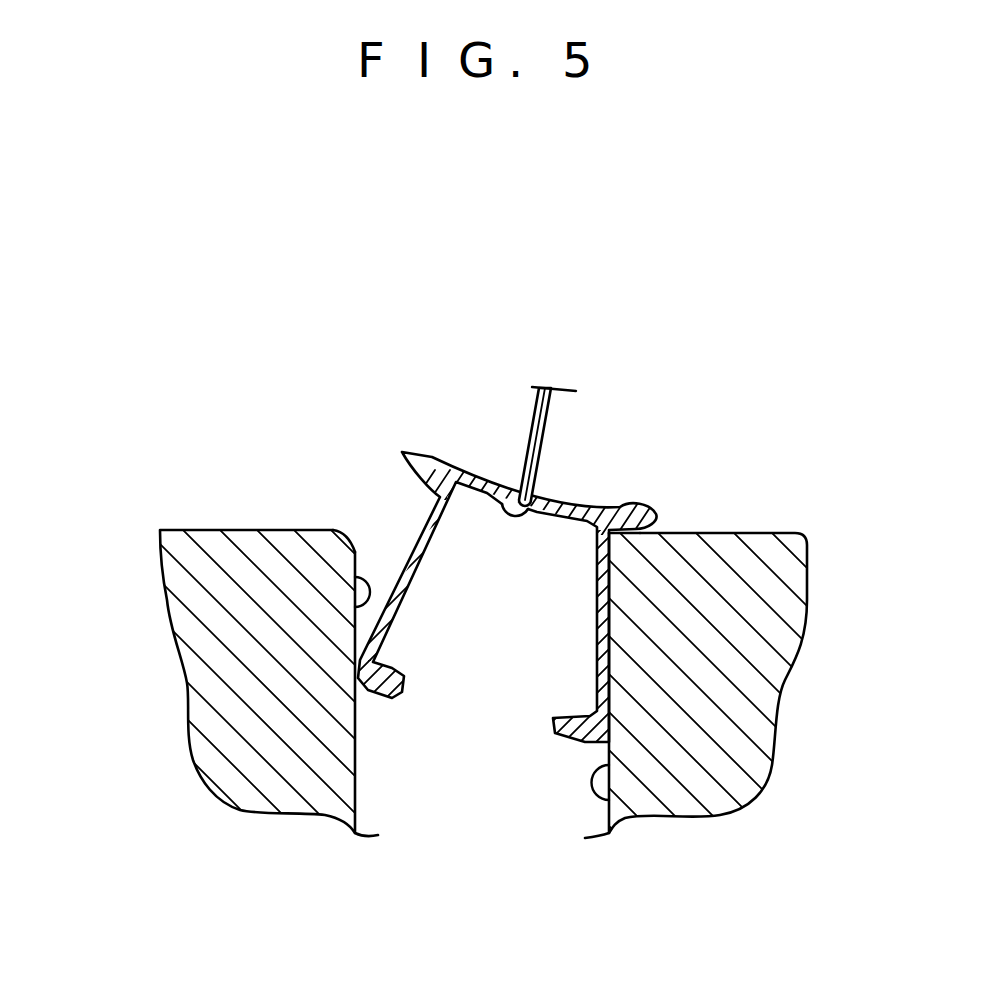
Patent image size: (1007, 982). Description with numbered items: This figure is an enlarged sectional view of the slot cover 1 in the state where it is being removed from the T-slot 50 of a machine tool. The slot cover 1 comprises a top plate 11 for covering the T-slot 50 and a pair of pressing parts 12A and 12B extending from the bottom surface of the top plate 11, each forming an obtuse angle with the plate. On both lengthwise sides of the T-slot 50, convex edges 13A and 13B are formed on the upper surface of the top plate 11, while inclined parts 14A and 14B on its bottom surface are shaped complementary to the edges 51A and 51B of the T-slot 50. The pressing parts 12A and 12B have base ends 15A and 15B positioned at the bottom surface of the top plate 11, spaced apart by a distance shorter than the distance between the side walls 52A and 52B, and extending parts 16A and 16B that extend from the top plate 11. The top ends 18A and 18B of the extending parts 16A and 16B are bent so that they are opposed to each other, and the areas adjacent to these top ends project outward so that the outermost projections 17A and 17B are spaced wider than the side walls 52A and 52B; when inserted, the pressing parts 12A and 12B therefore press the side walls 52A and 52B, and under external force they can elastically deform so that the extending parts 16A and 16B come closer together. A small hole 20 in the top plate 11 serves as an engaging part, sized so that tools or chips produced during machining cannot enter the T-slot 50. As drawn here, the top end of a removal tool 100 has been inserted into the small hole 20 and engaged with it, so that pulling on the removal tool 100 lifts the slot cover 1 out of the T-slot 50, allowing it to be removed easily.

The slot cover 1 is at (687, 358).
The removal tool 100 is at (553, 413).
The top plate 11 is at (487, 477).
The small hole 20 is at (535, 495).
The pressing part 12A is at (288, 387).
The pressing part 12B is at (483, 612).
The convex edge 13A is at (424, 458).
The convex edge 13B is at (630, 505).
The inclined part 14A is at (415, 560).
The inclined part 14B is at (662, 518).
The base end 15A is at (427, 497).
The base end 15B is at (597, 545).
The extending part 16A is at (417, 503).
The extending part 16B is at (597, 637).
The outermost projection 17A is at (358, 660).
The outermost projection 17B is at (605, 721).
The top end 18A is at (388, 697).
The top end 18B is at (567, 742).
The T-slot 50 is at (390, 787).
The edge 51A is at (354, 557).
The edge 51B is at (640, 537).
The side wall 52A is at (357, 606).
The side wall 52B is at (607, 800).